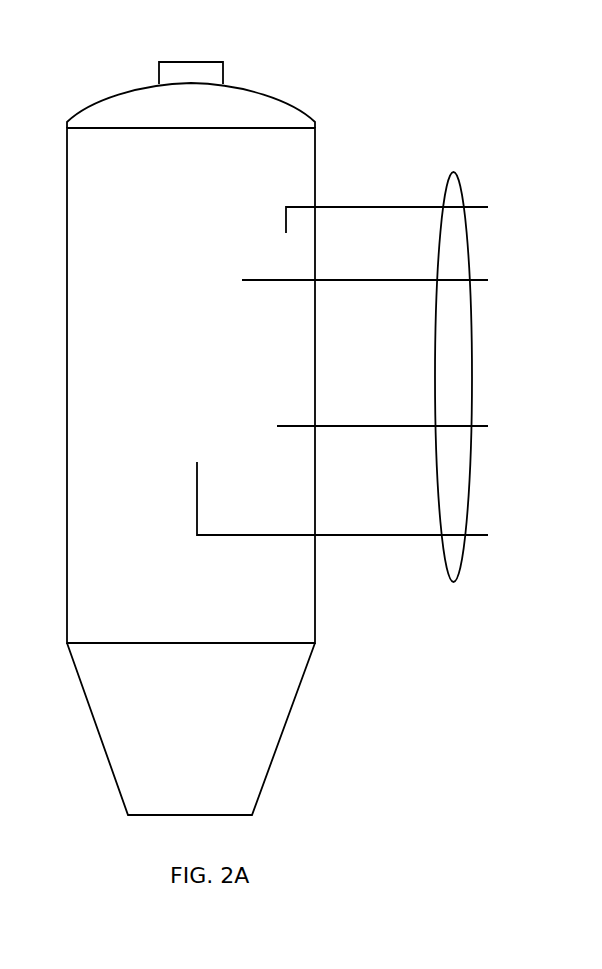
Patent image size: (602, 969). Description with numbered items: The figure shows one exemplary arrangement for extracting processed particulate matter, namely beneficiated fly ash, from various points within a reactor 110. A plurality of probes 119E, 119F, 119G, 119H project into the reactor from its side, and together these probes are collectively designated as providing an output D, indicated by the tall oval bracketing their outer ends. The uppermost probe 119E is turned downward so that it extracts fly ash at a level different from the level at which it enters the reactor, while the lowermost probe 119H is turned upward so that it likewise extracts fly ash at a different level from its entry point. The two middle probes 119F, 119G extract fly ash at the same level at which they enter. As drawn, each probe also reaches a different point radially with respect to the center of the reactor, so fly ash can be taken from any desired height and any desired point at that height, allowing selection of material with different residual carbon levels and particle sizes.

The reactor vessel 110 is at (148, 174).
The probe 119E is at (387, 204).
The probe 119F is at (365, 264).
The probe 119G is at (382, 409).
The probe 119H is at (342, 498).
The output D is at (453, 582).